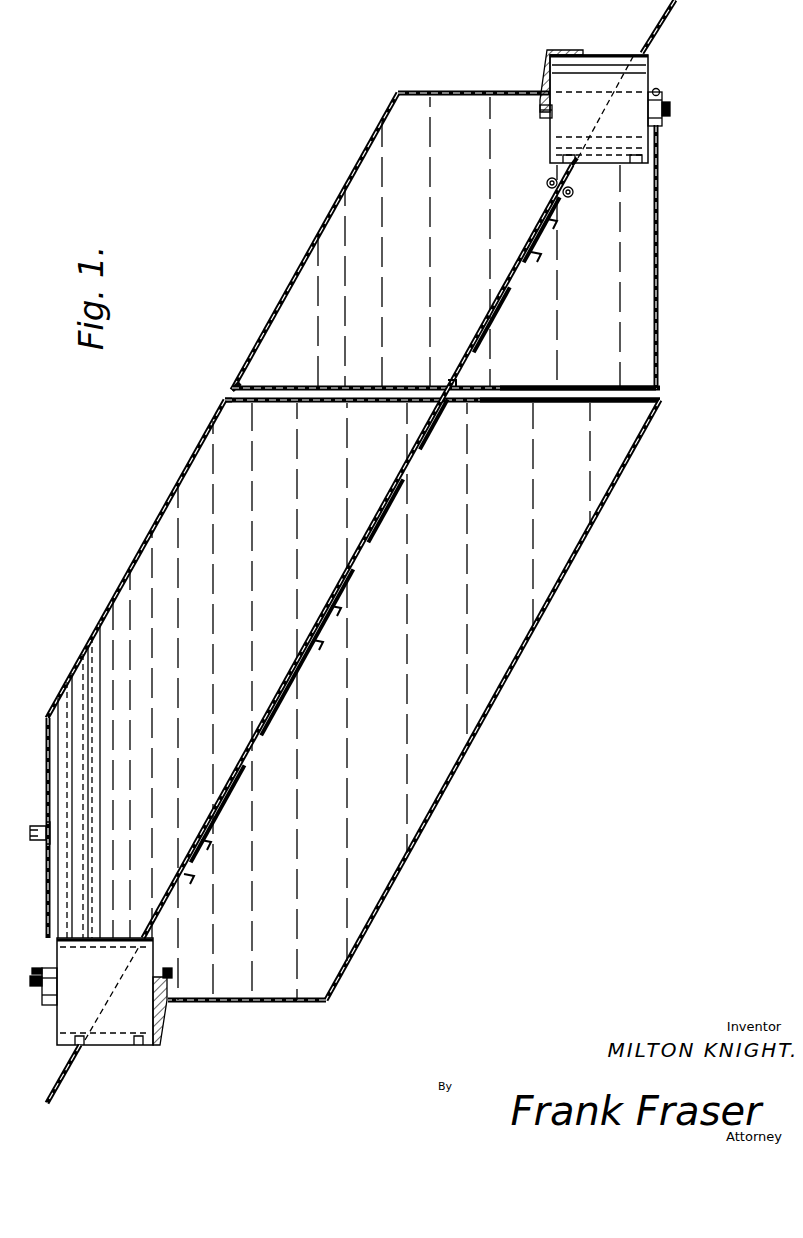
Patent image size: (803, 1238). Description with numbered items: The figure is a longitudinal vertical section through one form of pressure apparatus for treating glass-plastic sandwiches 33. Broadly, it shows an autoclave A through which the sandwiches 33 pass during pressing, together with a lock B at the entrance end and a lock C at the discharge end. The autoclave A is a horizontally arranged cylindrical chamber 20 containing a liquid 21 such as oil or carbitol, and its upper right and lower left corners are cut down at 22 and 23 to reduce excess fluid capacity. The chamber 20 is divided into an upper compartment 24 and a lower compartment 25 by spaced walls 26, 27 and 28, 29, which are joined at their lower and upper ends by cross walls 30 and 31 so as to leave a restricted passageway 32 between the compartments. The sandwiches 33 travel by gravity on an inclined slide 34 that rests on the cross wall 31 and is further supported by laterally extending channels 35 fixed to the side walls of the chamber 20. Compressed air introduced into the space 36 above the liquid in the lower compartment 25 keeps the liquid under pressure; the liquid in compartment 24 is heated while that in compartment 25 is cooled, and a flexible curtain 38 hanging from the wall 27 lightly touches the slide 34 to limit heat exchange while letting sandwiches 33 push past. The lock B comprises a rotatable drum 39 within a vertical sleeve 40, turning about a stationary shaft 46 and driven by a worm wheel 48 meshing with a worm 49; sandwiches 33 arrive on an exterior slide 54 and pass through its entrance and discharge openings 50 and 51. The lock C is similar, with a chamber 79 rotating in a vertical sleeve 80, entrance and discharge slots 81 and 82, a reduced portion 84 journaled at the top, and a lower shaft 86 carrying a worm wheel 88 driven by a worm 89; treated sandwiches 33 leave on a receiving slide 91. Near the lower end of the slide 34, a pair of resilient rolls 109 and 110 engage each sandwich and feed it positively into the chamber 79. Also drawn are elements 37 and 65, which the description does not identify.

The cylindrical chamber 20 is at (196, 434).
The liquid 21 is at (160, 522).
The cut-down corner 22 is at (318, 258).
The cut-down corner 23 is at (500, 706).
The upper compartment 24 is at (218, 398).
The lower compartment 25 is at (238, 372).
The spaced wall 26 is at (330, 406).
The spaced wall 27 is at (325, 386).
The spaced wall 28 is at (508, 404).
The spaced wall 29 is at (530, 386).
The cross wall 30 is at (440, 386).
The cross wall 31 is at (440, 408).
The restricted passageway 32 is at (428, 408).
The sandwiches 33 is at (200, 840).
The slide 34 is at (268, 732).
The laterally extending channels 35 is at (316, 645).
The space 36 is at (58, 760).
The fastener 37 is at (36, 840).
The curtain 38 is at (450, 378).
The cylindrical chamber 39 is at (58, 1028).
The vertical sleeve 40 is at (164, 1030).
The stationary pin or shaft 46 is at (164, 968).
The worm wheel 48 is at (40, 1000).
The worm 49 is at (40, 968).
The entrance opening 50 is at (80, 1034).
The discharge opening 51 is at (139, 1034).
The slide 54 is at (58, 1094).
The bolt head 65 is at (30, 980).
The cylindrical chamber 79 is at (586, 165).
The vertical sleeve 80 is at (545, 75).
The entrance slot 81 is at (562, 152).
The discharge slot 82 is at (634, 152).
The reduced portion 84 is at (542, 110).
The shaft 86 is at (648, 106).
The worm wheel 88 is at (659, 128).
The worm 89 is at (658, 88).
The receiving slide 91 is at (650, 16).
The roll 109 is at (547, 178).
The roll 110 is at (571, 194).
The autoclave A is at (94, 598).
The lock B is at (100, 1052).
The lock C is at (614, 56).